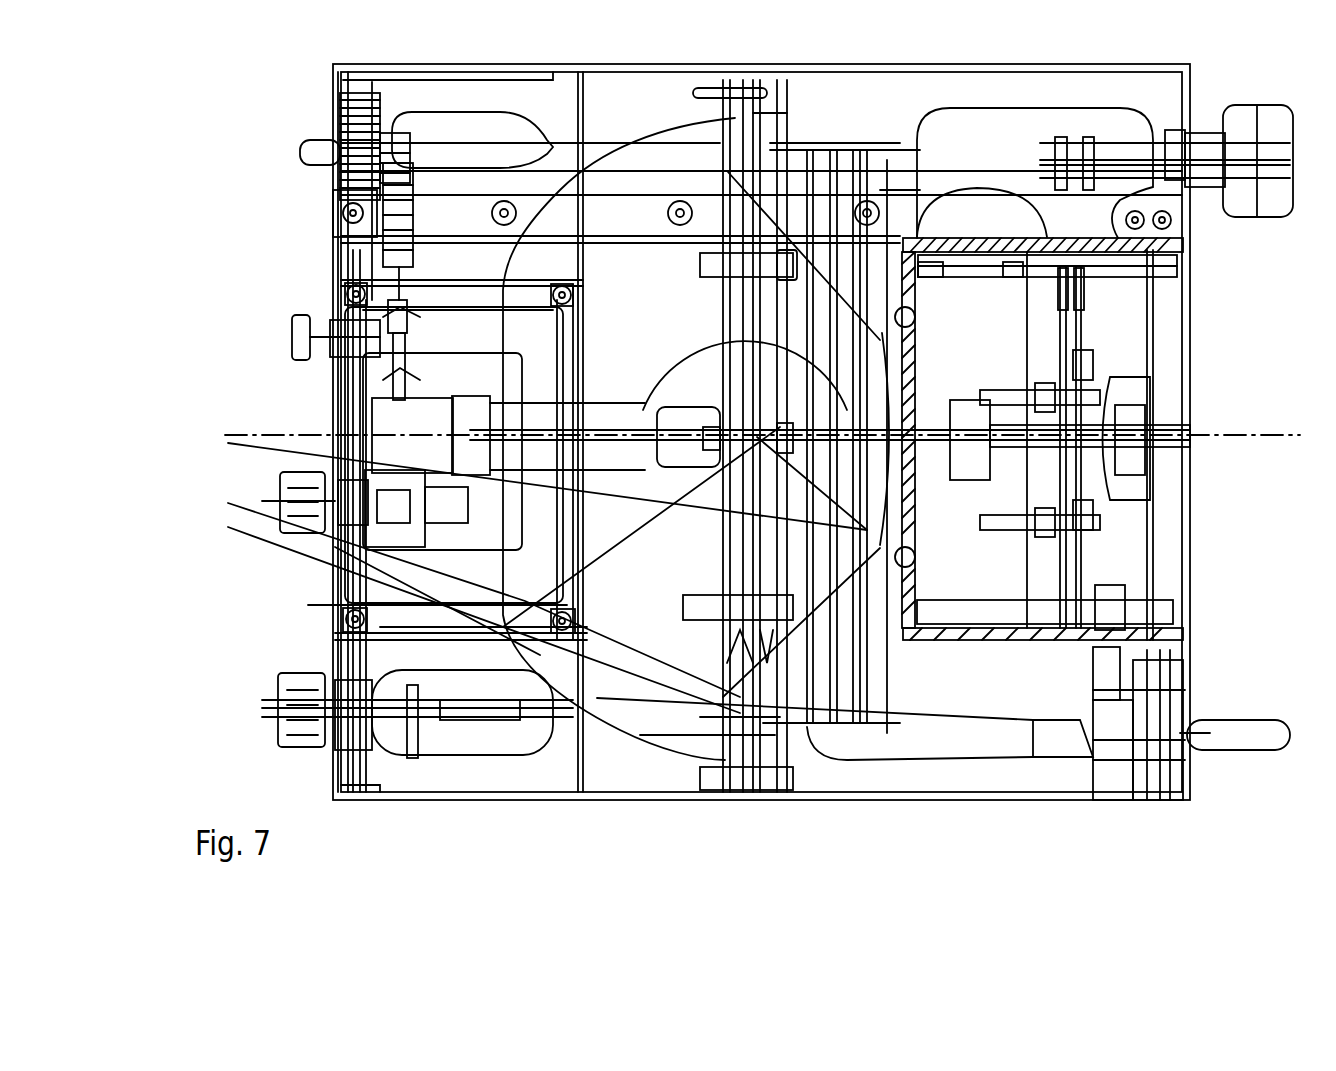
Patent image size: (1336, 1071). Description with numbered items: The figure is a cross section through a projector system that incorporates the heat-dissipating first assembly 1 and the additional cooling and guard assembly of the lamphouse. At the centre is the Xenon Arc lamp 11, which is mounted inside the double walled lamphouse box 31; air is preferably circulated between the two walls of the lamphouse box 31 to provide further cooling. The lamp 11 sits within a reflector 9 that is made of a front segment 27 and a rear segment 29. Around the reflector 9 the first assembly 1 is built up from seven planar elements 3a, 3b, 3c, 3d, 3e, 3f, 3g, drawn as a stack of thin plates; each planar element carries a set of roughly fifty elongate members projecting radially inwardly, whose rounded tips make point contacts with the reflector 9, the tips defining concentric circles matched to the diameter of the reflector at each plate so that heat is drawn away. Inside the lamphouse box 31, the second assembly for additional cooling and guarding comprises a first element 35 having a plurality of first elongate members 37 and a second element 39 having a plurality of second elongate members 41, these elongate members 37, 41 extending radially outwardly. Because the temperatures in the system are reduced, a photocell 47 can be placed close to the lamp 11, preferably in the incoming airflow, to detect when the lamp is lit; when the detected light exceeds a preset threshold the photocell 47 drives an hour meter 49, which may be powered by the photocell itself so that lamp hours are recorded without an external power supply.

The first assembly 1 is at (887, 757).
The reflector 9 is at (660, 95).
The Xenon Arc lamp 11 is at (708, 398).
The front segment 27 is at (642, 130).
The rear segment 29 is at (778, 260).
The lamphouse box 31 is at (1187, 247).
The first element 35 is at (1083, 351).
The first elongate members 37 is at (1083, 298).
The second element 39 is at (1058, 343).
The second elongate members 41 is at (1060, 291).
The photocell 47 is at (1105, 595).
The hour meter 49 is at (1187, 697).
The planar element 3a is at (753, 773).
The planar element 3b is at (780, 760).
The planar element 3c is at (807, 727).
The planar element 3d is at (837, 727).
The planar element 3e is at (847, 688).
The planar element 3f is at (860, 670).
The planar element 3g is at (867, 645).